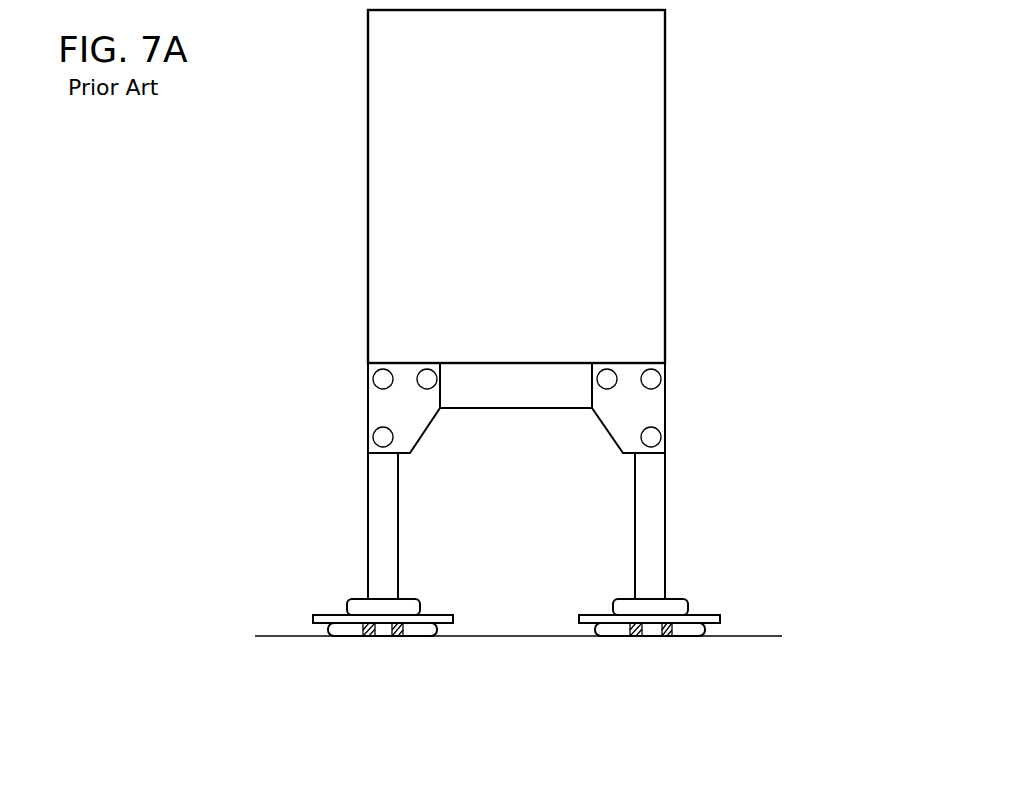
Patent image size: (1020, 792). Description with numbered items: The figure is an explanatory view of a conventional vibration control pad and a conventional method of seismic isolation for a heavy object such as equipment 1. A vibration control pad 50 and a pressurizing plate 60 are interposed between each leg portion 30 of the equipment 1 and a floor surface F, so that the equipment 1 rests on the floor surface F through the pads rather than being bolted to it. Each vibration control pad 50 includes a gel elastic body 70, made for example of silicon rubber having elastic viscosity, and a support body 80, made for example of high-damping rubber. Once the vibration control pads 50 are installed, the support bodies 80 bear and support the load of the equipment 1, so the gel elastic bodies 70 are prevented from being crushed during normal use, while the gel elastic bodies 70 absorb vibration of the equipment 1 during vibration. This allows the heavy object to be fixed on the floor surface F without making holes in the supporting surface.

The equipment 1 is at (650, 125).
The leg portion 30 is at (383, 498).
The vibration control pad 50 is at (305, 630).
The pressurizing plate 60 is at (432, 615).
The gel elastic body 70 is at (343, 638).
The support body 80 is at (400, 638).
The floor surface F is at (522, 635).